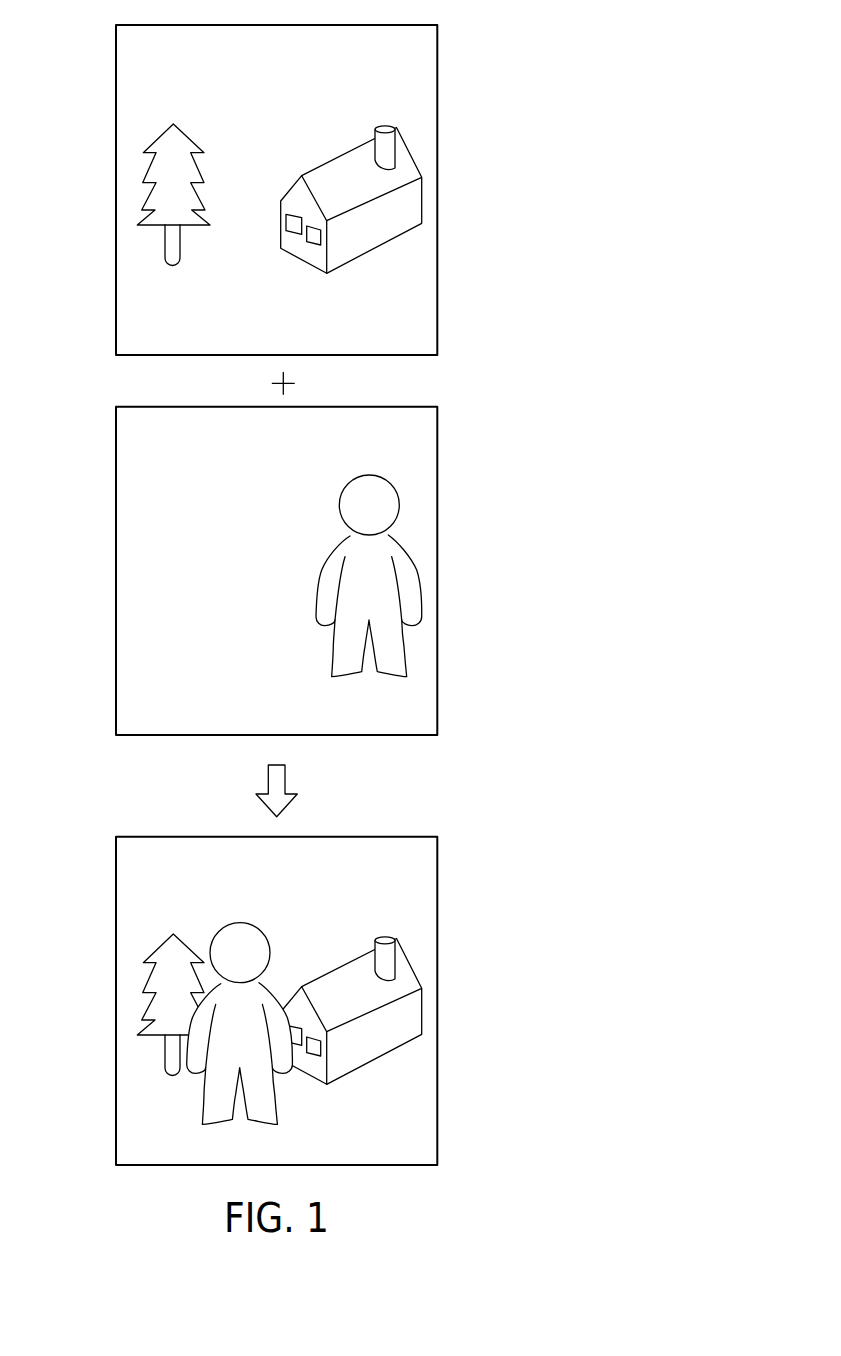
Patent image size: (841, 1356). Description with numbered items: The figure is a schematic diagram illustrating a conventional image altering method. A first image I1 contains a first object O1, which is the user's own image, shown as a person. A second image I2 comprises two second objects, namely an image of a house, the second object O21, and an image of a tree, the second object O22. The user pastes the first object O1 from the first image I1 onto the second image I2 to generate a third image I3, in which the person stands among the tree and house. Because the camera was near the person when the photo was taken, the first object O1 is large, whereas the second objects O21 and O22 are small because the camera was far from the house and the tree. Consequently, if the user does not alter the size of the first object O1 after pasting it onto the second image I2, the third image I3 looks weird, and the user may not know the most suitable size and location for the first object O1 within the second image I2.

The first image I1 is at (116, 572).
The second image I2 is at (116, 193).
The third image I3 is at (116, 1002).
The first object O1 is at (389, 653).
The second object O21 is at (387, 235).
The second object O22 is at (178, 143).